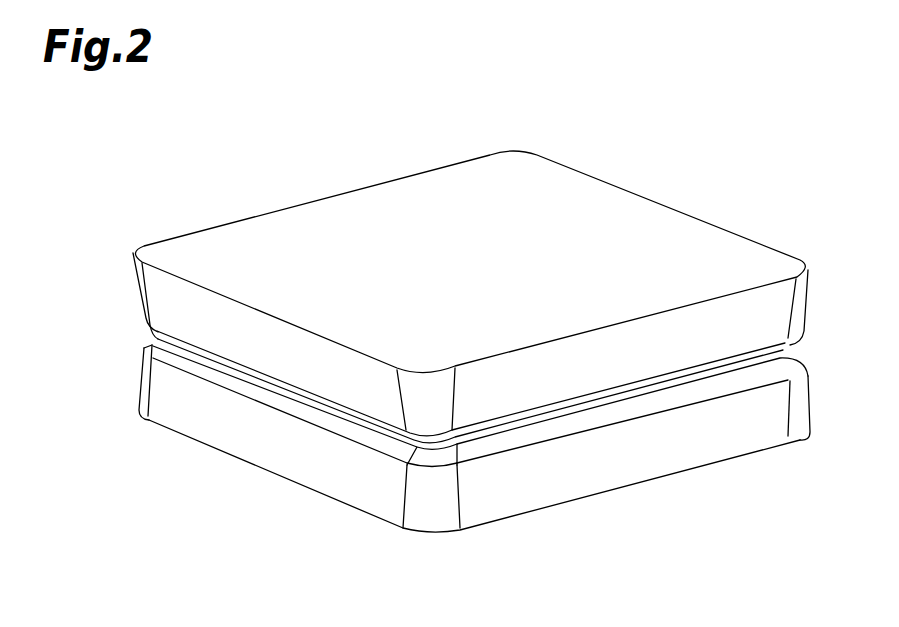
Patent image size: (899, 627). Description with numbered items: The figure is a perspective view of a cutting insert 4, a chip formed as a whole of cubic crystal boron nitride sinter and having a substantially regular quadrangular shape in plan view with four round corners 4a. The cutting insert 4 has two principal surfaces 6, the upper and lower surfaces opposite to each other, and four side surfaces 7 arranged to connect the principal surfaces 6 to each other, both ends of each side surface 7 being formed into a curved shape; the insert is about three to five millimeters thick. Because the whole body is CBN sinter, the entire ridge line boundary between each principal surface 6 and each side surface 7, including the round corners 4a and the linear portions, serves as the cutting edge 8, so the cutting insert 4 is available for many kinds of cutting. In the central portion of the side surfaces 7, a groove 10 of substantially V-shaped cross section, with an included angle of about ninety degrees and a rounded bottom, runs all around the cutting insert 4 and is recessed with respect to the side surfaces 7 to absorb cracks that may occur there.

The cutting insert 4 is at (309, 121).
The round corners 4a is at (798, 303).
The principal surfaces 6 is at (596, 222).
The side surfaces 7 is at (209, 421).
The cutting edge 8 is at (528, 353).
The groove 10 is at (733, 373).